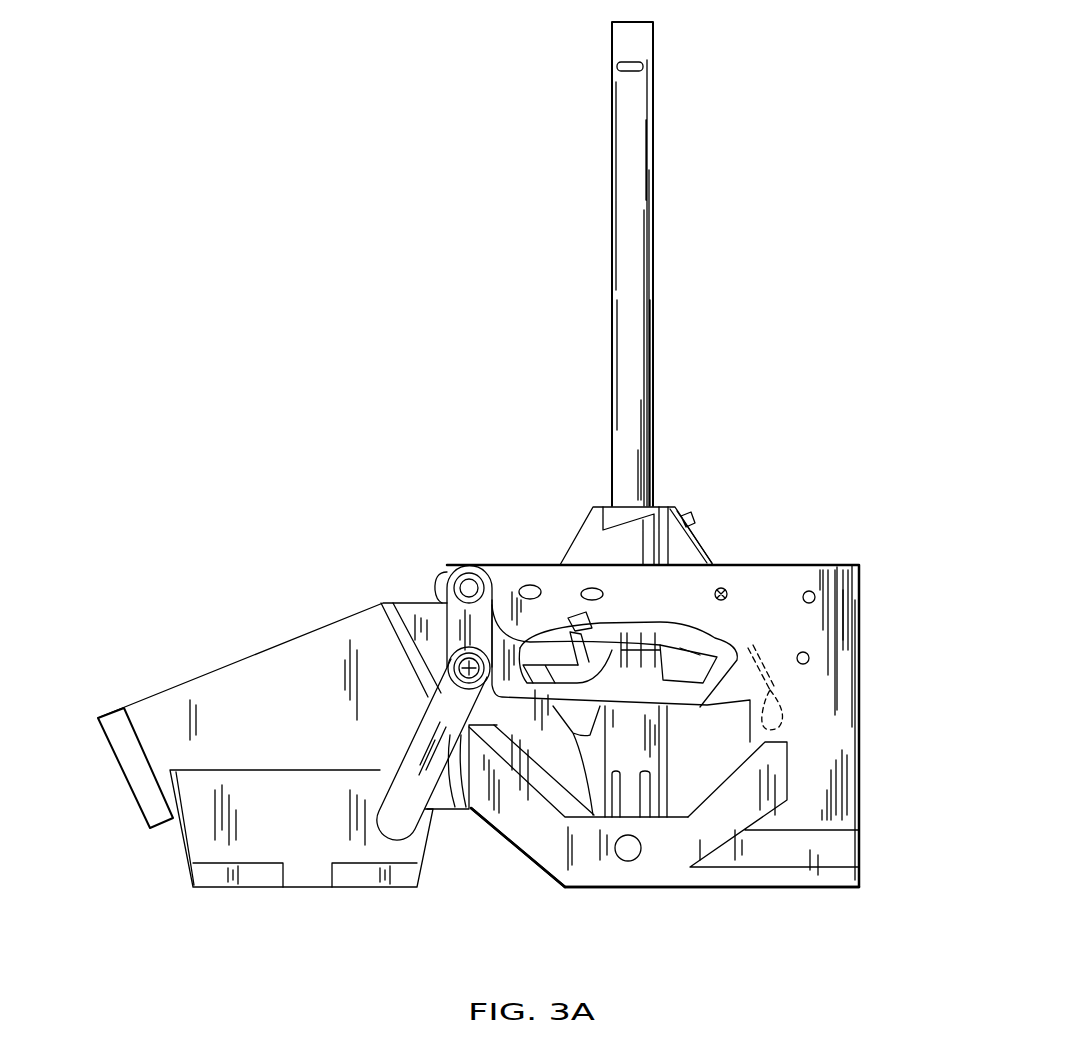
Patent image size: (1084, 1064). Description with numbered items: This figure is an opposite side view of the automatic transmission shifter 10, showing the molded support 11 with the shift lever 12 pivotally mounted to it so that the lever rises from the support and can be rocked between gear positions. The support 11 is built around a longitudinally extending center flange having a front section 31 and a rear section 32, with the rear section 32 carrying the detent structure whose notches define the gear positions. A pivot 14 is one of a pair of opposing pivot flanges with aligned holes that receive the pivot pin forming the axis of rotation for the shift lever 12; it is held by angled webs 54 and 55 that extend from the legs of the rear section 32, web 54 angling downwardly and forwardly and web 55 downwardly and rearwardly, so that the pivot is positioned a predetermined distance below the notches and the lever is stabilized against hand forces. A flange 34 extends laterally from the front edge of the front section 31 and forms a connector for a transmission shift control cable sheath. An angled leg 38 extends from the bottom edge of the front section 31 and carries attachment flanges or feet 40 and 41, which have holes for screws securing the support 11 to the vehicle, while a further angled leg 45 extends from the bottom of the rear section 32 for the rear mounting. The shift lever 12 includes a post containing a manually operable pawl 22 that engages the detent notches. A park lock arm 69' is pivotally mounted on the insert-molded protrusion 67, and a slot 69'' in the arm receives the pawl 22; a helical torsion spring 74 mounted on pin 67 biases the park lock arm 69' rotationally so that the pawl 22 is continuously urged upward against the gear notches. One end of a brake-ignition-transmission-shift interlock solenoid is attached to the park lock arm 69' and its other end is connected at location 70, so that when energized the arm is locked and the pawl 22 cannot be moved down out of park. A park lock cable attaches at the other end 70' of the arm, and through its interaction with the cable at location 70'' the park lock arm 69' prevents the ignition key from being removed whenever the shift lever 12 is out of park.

The automatic transmission shifter 10 is at (747, 295).
The support 11 is at (818, 552).
The shift lever 12 is at (657, 175).
The pivot 14 is at (625, 890).
The pawl 22 is at (675, 632).
The front section 31 is at (220, 668).
The rear section 32 is at (845, 563).
The flange 34 is at (133, 798).
The angled leg 38 is at (300, 840).
The attachment flange 40 is at (377, 890).
The attachment flange 41 is at (223, 890).
The angled leg 45 is at (785, 890).
The angled web 54 is at (712, 780).
The angled web 55 is at (522, 838).
The protrusion 67 is at (443, 640).
The park lock arm 69' is at (395, 630).
The slot 69'' is at (753, 571).
The location 70 is at (842, 687).
The end of park lock arm 70' is at (386, 806).
The location on park lock arm 70'' is at (460, 521).
The helical torsion spring 74 is at (492, 600).